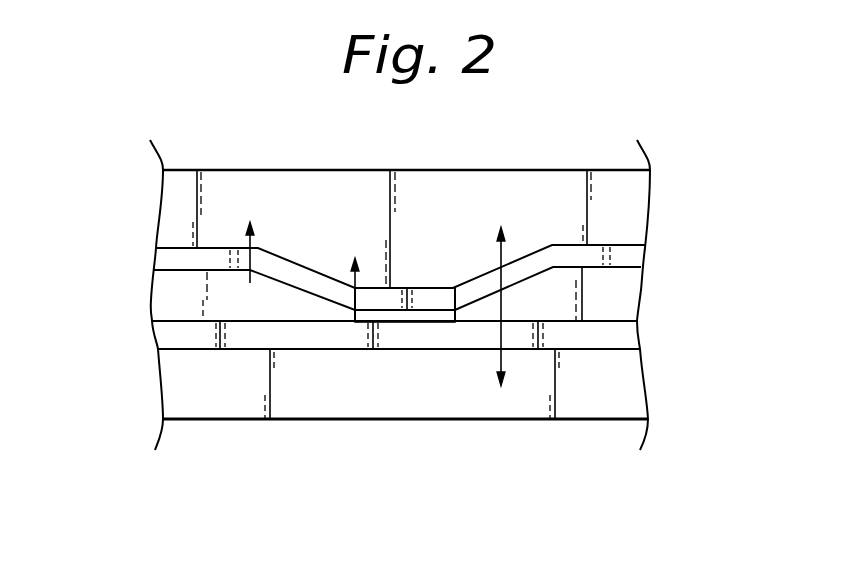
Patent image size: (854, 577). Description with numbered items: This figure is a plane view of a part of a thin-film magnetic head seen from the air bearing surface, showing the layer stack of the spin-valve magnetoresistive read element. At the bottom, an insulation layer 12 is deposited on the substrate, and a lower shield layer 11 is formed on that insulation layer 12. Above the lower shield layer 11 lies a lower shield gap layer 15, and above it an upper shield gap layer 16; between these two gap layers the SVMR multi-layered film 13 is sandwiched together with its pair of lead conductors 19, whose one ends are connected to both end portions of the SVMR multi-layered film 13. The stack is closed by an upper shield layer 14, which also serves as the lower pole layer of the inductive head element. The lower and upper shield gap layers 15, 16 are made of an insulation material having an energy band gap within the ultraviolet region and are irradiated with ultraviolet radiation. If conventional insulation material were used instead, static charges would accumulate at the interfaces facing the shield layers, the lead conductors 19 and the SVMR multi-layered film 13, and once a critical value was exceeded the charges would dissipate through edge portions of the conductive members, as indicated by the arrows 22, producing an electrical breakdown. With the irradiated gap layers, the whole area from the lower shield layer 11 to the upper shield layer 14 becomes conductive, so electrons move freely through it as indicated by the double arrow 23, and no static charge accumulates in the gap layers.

The lower shield layer 11 is at (632, 388).
The insulation layer 12 is at (632, 438).
The SVMR multi-layered film 13 is at (406, 315).
The upper shield layer 14 is at (632, 213).
The lower shield gap layer 15 is at (632, 338).
The upper shield gap layer 16 is at (632, 258).
The lead conductors 19 is at (165, 300).
The dissipation of accumulated charges 22 is at (352, 288).
The free movement of electrons 23 is at (497, 262).